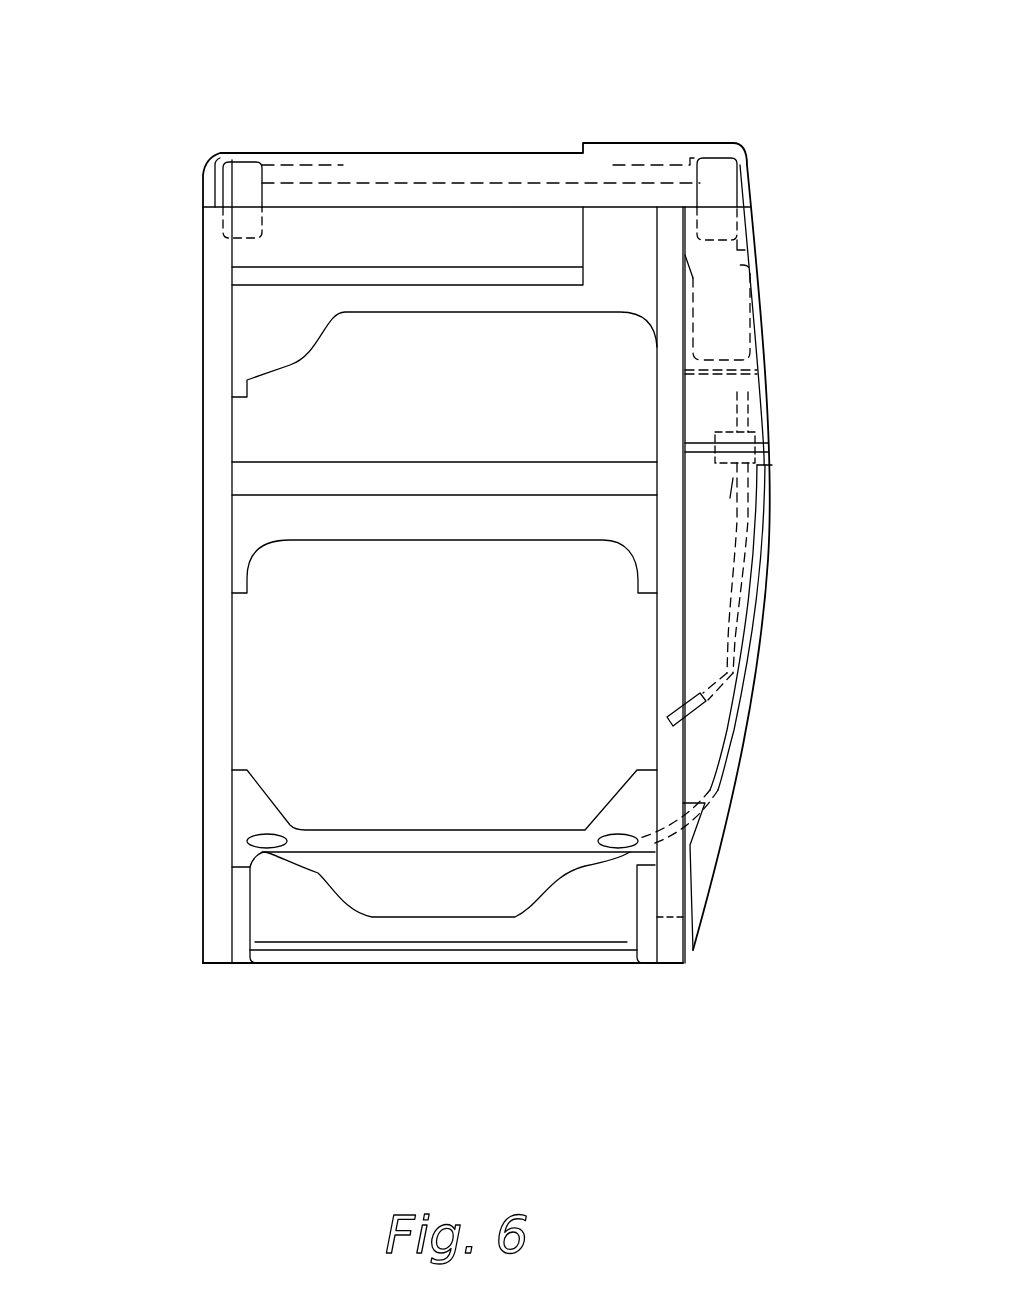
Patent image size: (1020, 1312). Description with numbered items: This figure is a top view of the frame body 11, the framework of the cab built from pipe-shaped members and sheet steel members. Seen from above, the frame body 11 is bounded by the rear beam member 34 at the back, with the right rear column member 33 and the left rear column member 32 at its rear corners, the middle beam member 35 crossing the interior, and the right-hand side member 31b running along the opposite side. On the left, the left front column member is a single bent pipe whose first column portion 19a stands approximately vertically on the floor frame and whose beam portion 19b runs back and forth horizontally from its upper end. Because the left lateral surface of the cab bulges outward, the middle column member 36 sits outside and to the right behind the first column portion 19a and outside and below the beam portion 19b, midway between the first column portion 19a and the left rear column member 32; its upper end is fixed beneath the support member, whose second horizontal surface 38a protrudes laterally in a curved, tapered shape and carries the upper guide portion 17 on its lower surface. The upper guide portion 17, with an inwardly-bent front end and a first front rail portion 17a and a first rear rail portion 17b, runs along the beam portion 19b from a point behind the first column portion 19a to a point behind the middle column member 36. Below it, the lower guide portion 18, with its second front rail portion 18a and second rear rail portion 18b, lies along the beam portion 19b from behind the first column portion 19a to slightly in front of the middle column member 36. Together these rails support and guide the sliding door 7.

The frame body 11 is at (285, 110).
The rear beam member 34 is at (462, 160).
The right rear column member 33 is at (240, 183).
The left rear column member 32 is at (727, 185).
The left side wall 31b is at (217, 430).
The middle beam member 35 is at (448, 480).
The second horizontal surface 38a is at (707, 490).
The middle column member 36 is at (750, 435).
The upper guide portion 17 is at (740, 548).
The first front rail portion 17a is at (700, 690).
The first rear rail portion 17b is at (737, 608).
The lower guide portion 18 is at (727, 730).
The second front rail portion 18a is at (627, 837).
The second rear rail portion 18b is at (730, 498).
The first column portion 19a is at (673, 950).
The beam portion 19b is at (670, 647).
The sliding door 7 is at (722, 795).